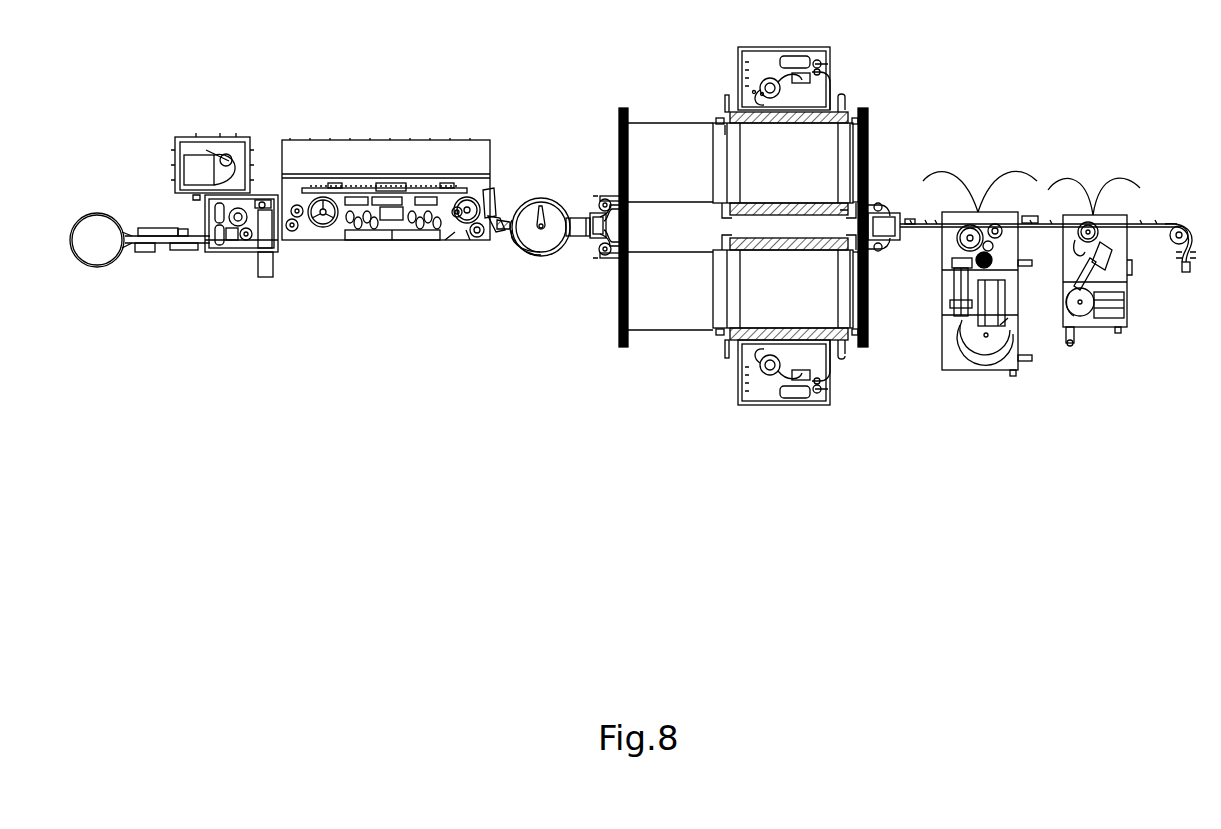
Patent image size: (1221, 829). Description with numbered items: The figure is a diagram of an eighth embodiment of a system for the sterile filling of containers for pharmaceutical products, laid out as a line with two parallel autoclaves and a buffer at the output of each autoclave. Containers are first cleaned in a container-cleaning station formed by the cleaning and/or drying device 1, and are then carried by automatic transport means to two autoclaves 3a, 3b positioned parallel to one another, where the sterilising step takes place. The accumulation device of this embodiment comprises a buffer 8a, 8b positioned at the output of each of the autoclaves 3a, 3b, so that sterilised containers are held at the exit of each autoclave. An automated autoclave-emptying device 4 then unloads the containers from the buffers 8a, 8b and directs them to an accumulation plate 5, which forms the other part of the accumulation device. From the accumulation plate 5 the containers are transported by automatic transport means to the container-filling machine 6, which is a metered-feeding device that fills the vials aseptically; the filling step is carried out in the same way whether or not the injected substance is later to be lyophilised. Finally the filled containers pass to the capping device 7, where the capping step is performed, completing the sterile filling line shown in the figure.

The cleaning and/or drying device 1 is at (1045, 162).
The autoclave 3a is at (828, 145).
The autoclave 3b is at (828, 300).
The automated autoclave-emptying device 4 is at (605, 195).
The accumulation plate 5 is at (539, 297).
The container-filling machine 6 is at (392, 297).
The capping device 7 is at (190, 297).
The buffer 8a is at (673, 143).
The buffer 8b is at (673, 310).